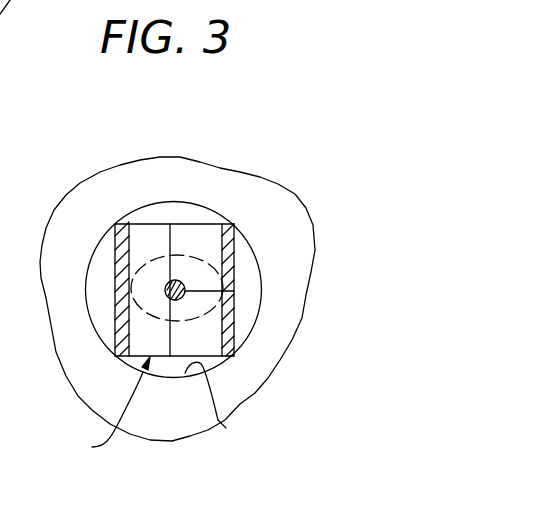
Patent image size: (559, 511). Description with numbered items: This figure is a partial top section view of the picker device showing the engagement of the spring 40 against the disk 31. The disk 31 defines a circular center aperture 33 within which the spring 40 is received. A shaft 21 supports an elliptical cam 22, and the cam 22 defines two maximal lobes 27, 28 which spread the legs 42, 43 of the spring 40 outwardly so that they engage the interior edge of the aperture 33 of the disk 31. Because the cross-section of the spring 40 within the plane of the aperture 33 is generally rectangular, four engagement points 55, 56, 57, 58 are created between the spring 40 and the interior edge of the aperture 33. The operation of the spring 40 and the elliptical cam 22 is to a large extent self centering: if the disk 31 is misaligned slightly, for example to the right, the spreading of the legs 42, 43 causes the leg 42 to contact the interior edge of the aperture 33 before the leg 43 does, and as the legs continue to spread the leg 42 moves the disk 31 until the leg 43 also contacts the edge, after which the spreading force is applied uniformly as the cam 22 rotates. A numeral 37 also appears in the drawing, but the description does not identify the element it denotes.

The shaft 21 is at (257, 314).
The elliptical cam 22 is at (188, 274).
The maximal lobe 27 is at (228, 292).
The maximal lobe 28 is at (125, 292).
The disk 31 is at (172, 426).
The circular center aperture 33 is at (222, 404).
The member 37 is at (13, 401).
The spring 40 is at (102, 410).
The leg 42 is at (183, 233).
The leg 43 is at (150, 231).
The engagement point 55 is at (232, 225).
The engagement point 56 is at (235, 356).
The engagement point 57 is at (115, 357).
The engagement point 58 is at (115, 224).